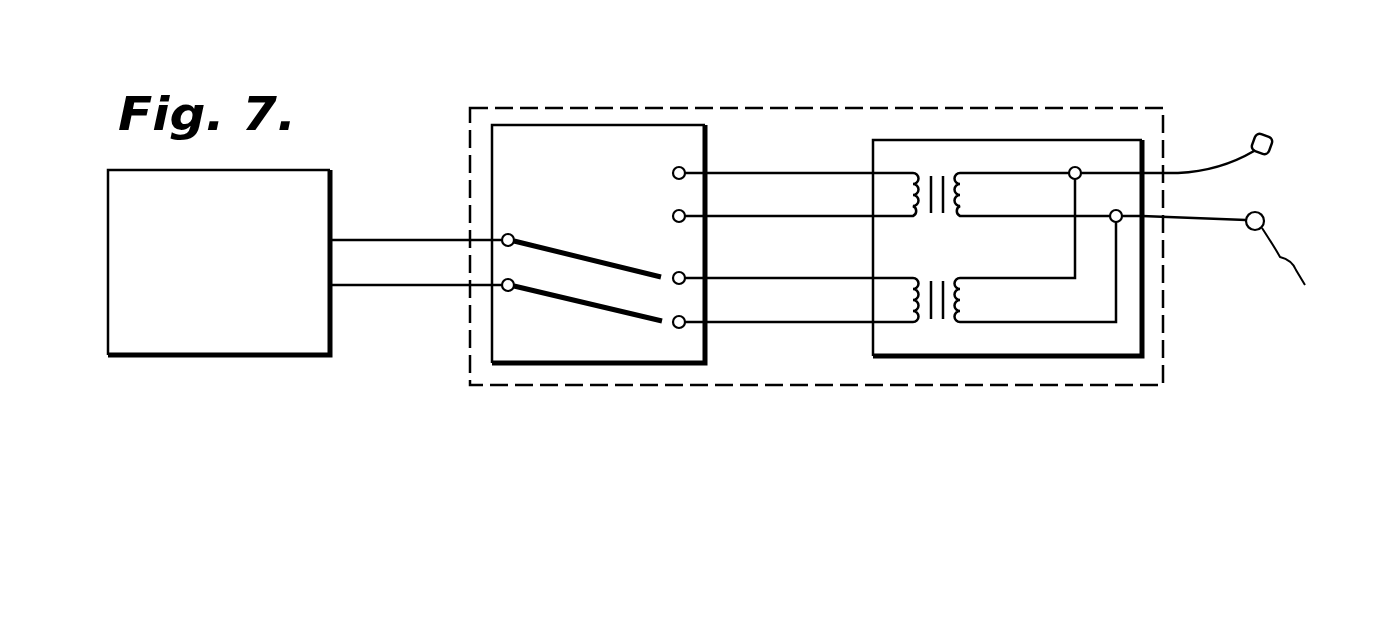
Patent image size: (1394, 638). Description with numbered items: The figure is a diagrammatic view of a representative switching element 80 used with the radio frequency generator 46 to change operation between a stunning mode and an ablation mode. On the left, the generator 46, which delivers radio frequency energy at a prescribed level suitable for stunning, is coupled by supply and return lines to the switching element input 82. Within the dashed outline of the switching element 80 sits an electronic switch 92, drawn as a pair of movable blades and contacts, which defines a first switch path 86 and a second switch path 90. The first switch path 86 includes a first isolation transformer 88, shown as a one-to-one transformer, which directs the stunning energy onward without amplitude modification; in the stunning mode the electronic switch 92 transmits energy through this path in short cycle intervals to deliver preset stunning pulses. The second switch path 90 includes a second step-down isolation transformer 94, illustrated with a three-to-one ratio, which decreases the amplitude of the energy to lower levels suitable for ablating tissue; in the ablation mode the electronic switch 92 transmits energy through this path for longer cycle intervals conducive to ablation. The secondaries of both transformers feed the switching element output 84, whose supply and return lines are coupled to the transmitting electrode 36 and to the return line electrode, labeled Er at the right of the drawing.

The generator 46 is at (250, 337).
The switching element 80 is at (752, 103).
The switching element input 82 is at (485, 230).
The switching element output 84 is at (1174, 158).
The first switch path 86 is at (675, 156).
The first isolation transformer 88 is at (941, 138).
The second switch path 90 is at (671, 334).
The electronic switch 92 is at (532, 168).
The second step-down isolation transformer 94 is at (937, 344).
The transmitting electrode 36 is at (1258, 136).